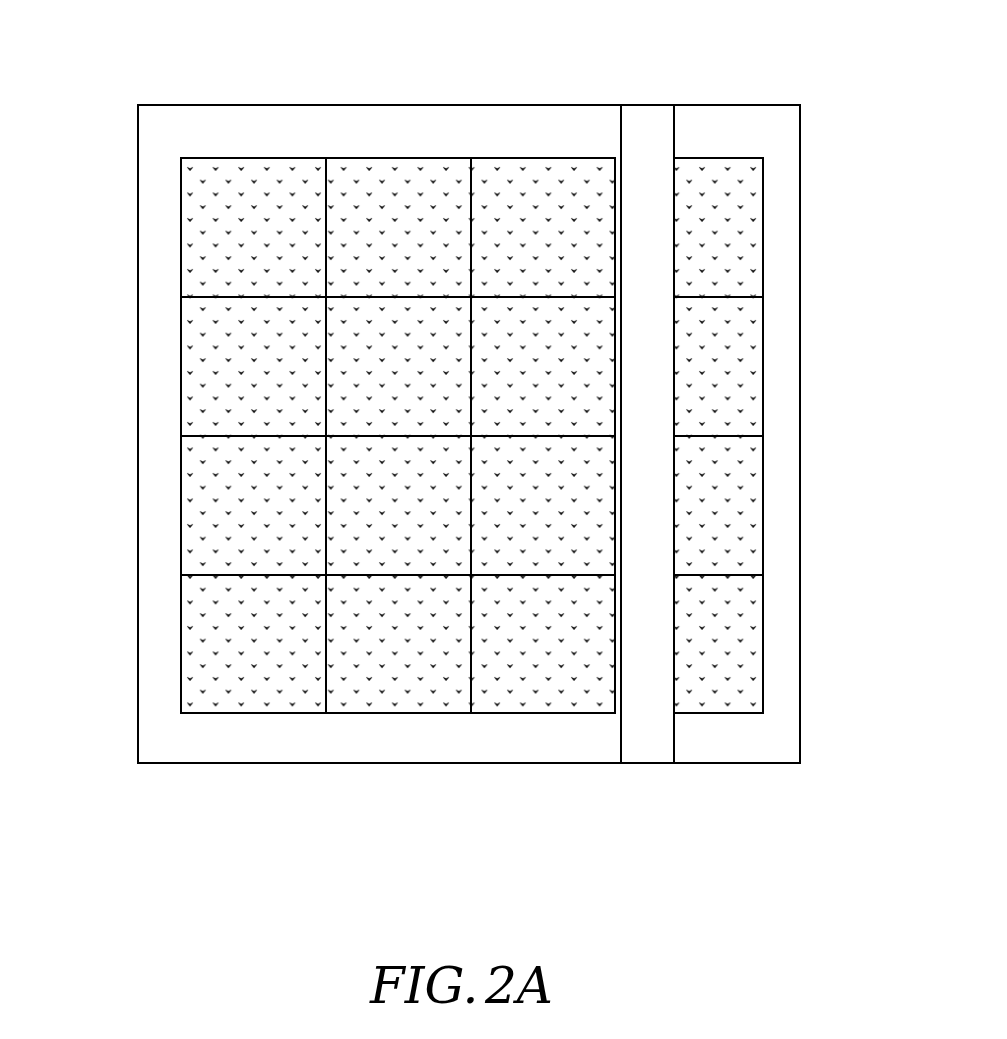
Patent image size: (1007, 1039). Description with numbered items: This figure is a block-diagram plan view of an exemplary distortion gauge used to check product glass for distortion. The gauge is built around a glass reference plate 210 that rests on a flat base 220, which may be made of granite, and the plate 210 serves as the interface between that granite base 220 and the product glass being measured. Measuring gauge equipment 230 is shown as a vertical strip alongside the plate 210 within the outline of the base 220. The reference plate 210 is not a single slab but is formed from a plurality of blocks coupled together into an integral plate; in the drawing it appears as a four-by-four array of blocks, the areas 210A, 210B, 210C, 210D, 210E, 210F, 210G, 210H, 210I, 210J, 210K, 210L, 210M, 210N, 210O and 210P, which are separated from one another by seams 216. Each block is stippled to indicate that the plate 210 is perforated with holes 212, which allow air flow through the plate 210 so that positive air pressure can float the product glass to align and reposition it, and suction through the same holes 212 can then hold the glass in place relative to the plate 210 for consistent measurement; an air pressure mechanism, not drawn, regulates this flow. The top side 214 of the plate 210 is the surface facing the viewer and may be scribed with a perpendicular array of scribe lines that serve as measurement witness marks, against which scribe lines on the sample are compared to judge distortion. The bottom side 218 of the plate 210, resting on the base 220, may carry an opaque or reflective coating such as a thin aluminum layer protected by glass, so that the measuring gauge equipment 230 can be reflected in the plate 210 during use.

The glass reference plate 210 is at (430, 429).
The flat base 220 is at (250, 103).
The measuring gauge equipment 230 is at (649, 105).
The holes 212 is at (248, 703).
The top side 214 is at (387, 693).
The seams 216 is at (492, 577).
The bottom side 218 is at (549, 715).
The area 210A is at (253, 644).
The area 210B is at (398, 644).
The area 210C is at (253, 505).
The area 210D is at (398, 505).
The area 210E is at (543, 644).
The area 210F is at (253, 366).
The area 210G is at (543, 505).
The area 210H is at (398, 366).
The area 210I is at (718, 644).
The area 210J is at (253, 227).
The area 210K is at (543, 366).
The area 210L is at (718, 505).
The area 210M is at (398, 227).
The area 210N is at (543, 227).
The area 210O is at (718, 366).
The area 210P is at (718, 227).